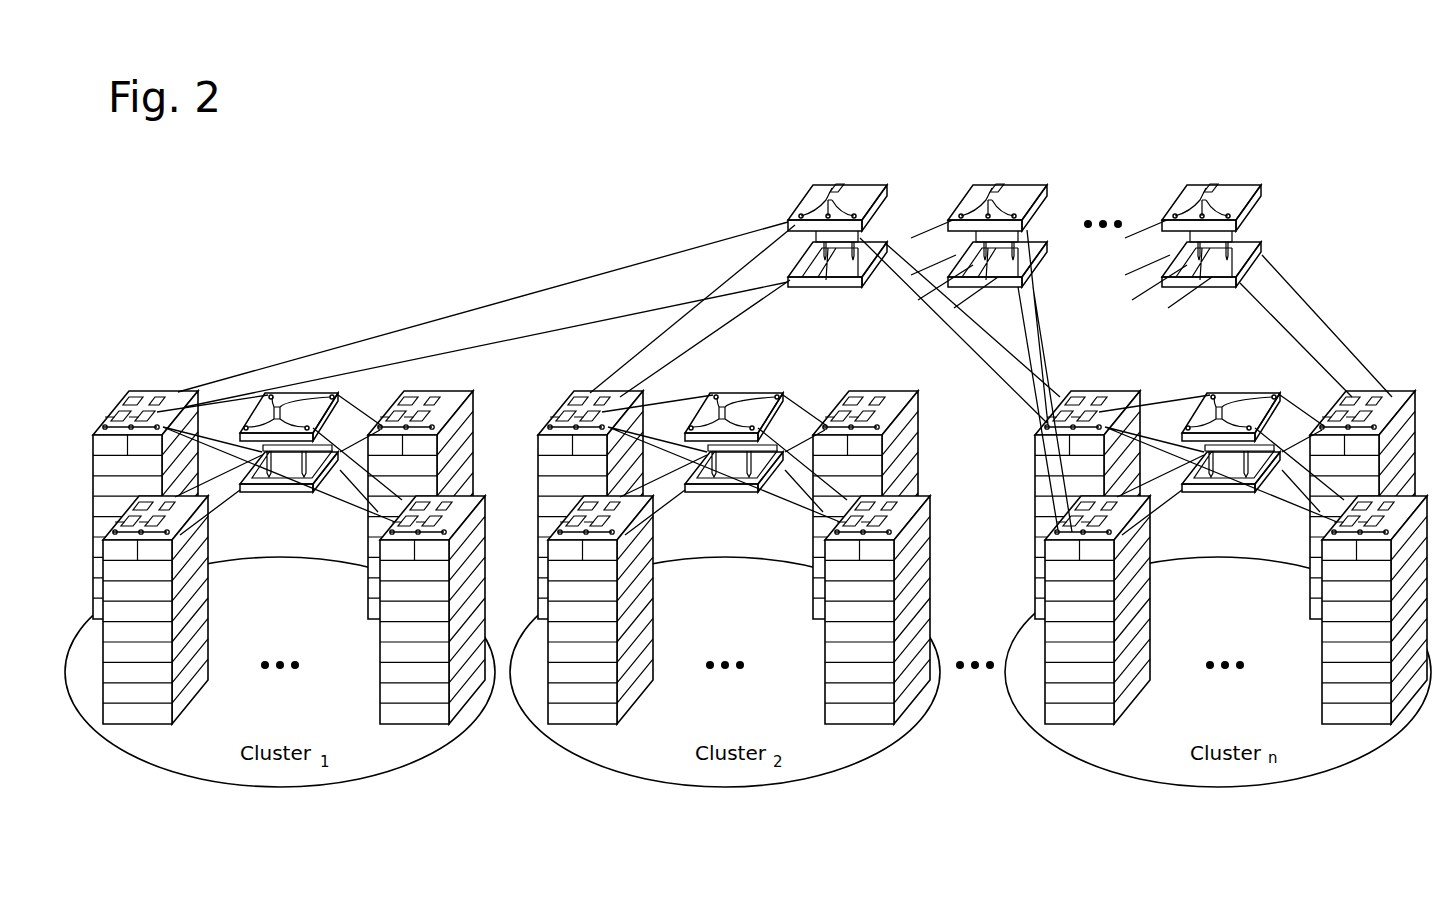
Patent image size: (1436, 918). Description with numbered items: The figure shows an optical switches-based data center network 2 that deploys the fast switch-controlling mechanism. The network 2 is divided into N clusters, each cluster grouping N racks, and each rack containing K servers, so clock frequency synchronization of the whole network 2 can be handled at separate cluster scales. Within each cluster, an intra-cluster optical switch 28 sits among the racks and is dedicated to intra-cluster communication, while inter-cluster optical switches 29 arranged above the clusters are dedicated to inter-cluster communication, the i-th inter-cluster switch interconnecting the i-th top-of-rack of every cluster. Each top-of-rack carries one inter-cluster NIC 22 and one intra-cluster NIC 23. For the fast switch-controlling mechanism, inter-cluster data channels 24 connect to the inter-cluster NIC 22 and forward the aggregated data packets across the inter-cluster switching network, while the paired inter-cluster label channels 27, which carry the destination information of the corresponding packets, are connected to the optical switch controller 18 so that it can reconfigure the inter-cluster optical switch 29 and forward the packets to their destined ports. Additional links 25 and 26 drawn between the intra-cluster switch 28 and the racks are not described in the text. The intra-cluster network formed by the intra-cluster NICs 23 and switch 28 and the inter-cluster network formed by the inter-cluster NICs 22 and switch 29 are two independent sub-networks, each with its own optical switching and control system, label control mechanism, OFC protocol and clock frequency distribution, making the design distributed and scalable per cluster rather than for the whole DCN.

The optical switches-based DCN 2 is at (1324, 222).
The optical switch controller 18 is at (863, 172).
The inter-cluster NIC 22 is at (122, 401).
The intra-cluster NIC 23 is at (178, 393).
The inter-cluster data channel 24 is at (518, 340).
The link 25 is at (356, 493).
The link 26 is at (350, 457).
The inter-cluster label channel 27 is at (515, 297).
The intra-cluster optical switch 28 is at (270, 487).
The inter-cluster optical switch 29 is at (798, 235).